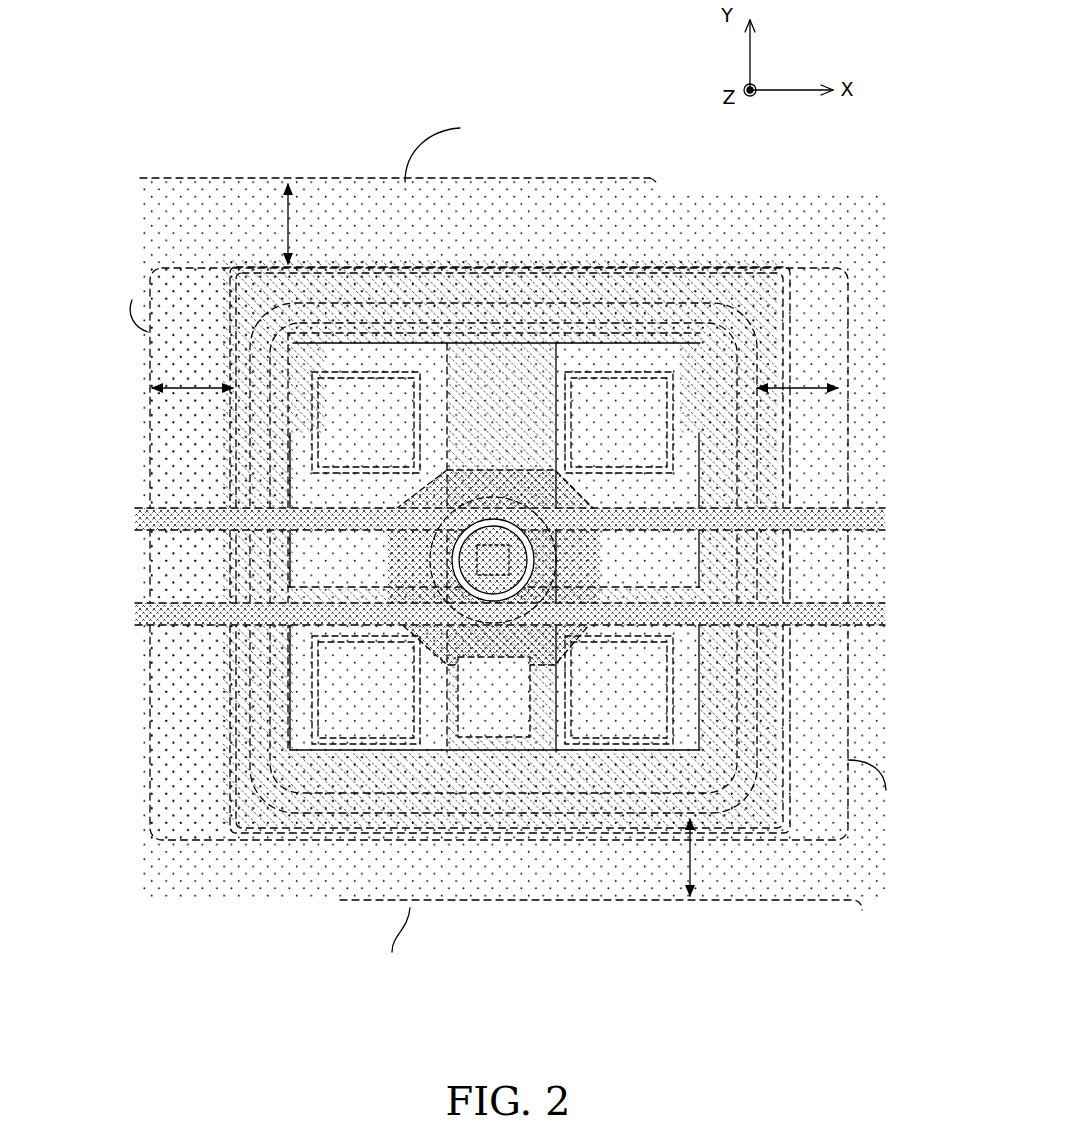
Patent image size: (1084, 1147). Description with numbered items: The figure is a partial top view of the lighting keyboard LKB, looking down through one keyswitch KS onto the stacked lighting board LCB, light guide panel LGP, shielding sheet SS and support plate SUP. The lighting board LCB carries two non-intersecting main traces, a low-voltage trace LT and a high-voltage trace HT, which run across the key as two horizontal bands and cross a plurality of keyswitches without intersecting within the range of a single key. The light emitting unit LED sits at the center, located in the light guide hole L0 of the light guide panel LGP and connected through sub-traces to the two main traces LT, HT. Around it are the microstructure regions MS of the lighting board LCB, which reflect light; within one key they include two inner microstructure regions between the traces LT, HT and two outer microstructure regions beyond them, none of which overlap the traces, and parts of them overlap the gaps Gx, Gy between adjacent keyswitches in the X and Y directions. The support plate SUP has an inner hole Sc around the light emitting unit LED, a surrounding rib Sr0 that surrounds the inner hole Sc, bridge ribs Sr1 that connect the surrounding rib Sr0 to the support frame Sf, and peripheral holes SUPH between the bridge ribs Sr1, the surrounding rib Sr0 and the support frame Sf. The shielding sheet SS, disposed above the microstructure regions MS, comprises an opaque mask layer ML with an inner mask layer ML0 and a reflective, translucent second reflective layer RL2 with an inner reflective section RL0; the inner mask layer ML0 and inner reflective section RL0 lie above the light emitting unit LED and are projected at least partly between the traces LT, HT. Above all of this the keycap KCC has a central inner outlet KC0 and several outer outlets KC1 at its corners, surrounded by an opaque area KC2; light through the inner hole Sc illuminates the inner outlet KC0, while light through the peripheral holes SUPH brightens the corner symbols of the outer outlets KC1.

The lighting keyboard LKB is at (305, 66).
The lighting board LCB is at (227, 918).
The keyswitch KS is at (195, 271).
The keycap KCC is at (745, 272).
The support plate SUP is at (716, 258).
The peripheral hole SUPH is at (273, 673).
The shielding sheet SS is at (783, 268).
The light guide panel LGP is at (791, 270).
The support frame Sf is at (238, 820).
The inner hole Sc is at (443, 565).
The bridge rib Sr1 is at (303, 629).
The surrounding rib Sr0 is at (478, 655).
The opaque area KC2 is at (420, 392).
The outer outlet KC1 is at (378, 745).
The inner outlet KC0 is at (417, 720).
The second reflective layer RL2 is at (622, 338).
The inner reflective section RL0 is at (494, 480).
The light guide hole L0 is at (486, 540).
The light emitting unit LED is at (494, 578).
The inner mask layer ML0 is at (453, 528).
The mask layer ML is at (243, 565).
The microstructure region MS is at (180, 665).
The high-voltage trace HT is at (877, 520).
The low-voltage trace LT is at (878, 620).
The gap in X direction Gx is at (495, 375).
The gap in Y direction Gy is at (489, 540).